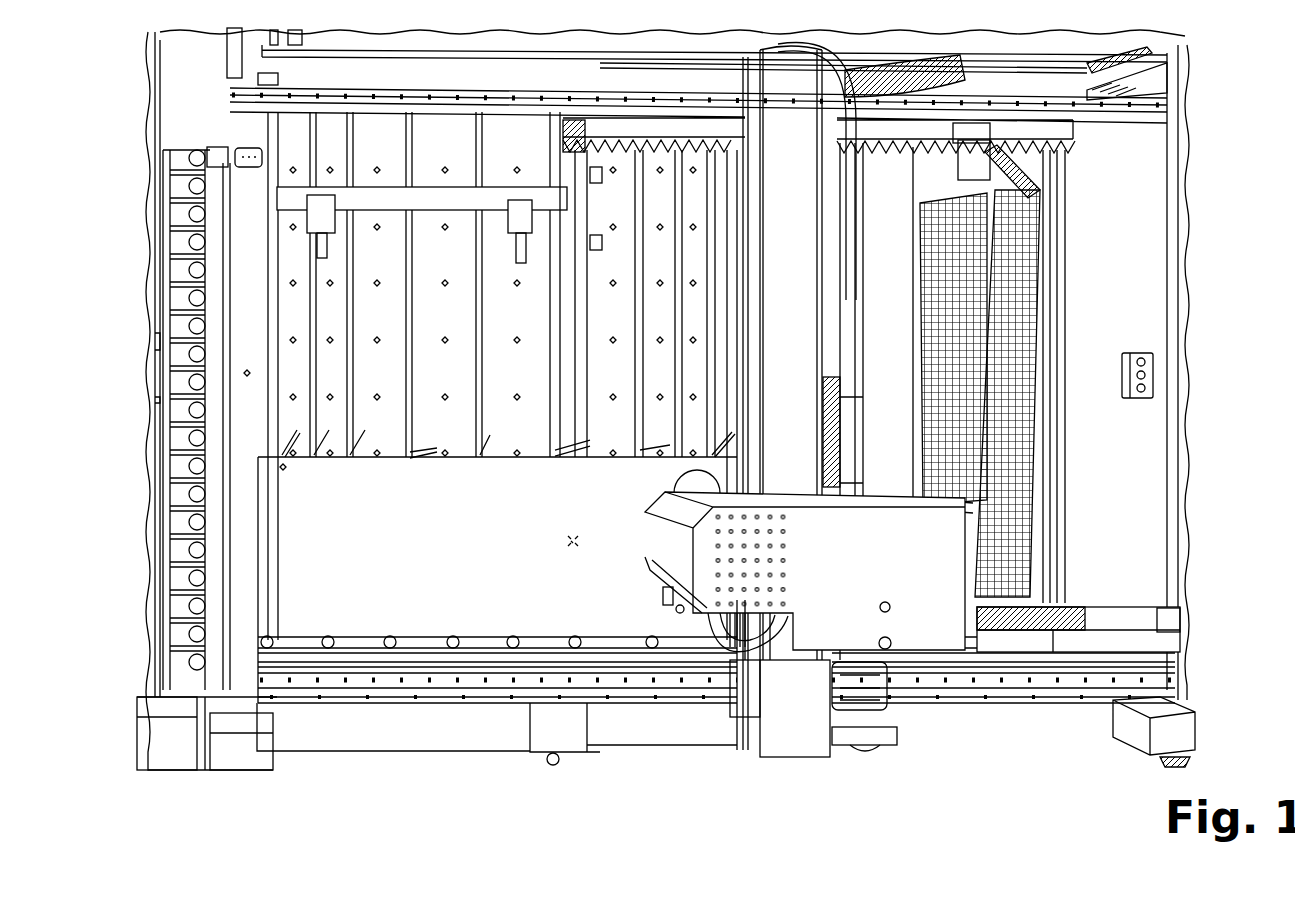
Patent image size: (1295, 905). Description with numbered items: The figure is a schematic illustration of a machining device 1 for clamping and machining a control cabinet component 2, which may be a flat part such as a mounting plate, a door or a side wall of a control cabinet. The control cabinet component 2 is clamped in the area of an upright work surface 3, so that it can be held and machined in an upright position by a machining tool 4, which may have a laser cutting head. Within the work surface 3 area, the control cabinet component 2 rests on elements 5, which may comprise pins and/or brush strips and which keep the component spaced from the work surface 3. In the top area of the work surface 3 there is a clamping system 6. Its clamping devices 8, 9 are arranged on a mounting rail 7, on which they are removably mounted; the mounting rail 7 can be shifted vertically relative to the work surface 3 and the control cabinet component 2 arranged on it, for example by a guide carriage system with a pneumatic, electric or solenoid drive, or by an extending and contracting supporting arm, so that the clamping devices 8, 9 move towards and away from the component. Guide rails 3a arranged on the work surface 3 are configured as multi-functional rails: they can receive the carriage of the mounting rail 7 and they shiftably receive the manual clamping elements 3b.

The machining device 1 is at (1197, 82).
The control cabinet component 2 is at (353, 607).
The work surface 3 is at (177, 422).
The guide rails 3a is at (273, 335).
The manual clamping elements 3b is at (270, 455).
The machining tool 4 is at (803, 640).
The elements 5 is at (293, 280).
The clamping system 6 is at (456, 198).
The mounting rail 7 is at (385, 200).
The clamping device 8 is at (320, 207).
The clamping device 9 is at (520, 207).